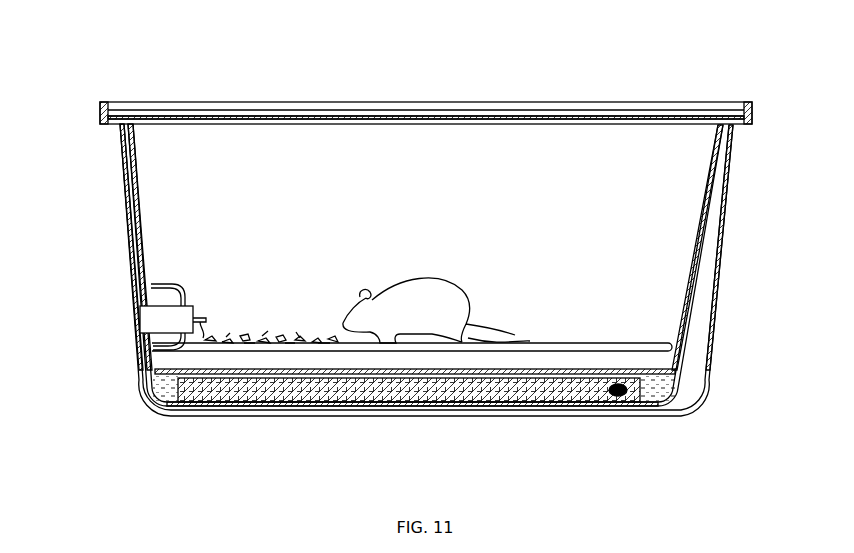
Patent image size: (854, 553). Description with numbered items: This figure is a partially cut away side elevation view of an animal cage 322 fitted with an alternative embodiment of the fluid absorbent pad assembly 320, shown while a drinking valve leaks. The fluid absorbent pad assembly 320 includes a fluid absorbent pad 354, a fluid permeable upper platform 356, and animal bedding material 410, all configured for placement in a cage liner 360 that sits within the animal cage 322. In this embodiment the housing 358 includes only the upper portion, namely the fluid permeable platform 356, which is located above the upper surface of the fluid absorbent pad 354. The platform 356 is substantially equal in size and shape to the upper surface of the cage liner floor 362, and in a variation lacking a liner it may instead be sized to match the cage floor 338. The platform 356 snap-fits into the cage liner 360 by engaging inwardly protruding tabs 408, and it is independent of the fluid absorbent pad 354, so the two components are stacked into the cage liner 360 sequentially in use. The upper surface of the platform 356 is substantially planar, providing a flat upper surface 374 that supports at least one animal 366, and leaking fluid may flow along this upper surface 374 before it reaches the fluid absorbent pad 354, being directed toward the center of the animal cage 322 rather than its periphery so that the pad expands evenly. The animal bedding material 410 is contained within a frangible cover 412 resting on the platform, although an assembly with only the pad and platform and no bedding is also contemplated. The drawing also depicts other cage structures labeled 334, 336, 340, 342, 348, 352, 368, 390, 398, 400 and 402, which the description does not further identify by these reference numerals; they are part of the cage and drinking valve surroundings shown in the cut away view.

The fluid absorbent pad assembly 320 is at (225, 90).
The animal cage 322 is at (725, 205).
The feeder/water bottle 334 is at (196, 307).
The drinking nozzle 336 is at (208, 322).
The cage floor 338 is at (495, 410).
The upper rim of cage body 340 is at (722, 158).
The left side wall 342 is at (125, 198).
The lid 348 is at (540, 150).
The feeder bracket 352 is at (178, 282).
The fluid absorbent pad 354 is at (335, 395).
The fluid permeable upper platform 356 is at (625, 372).
The housing 358 is at (136, 384).
The cage liner 360 is at (690, 252).
The cage liner floor 362 is at (575, 405).
The animal 366 is at (445, 296).
The sensor 368 is at (620, 400).
The upper surface 374 is at (258, 375).
The bottom wall 390 is at (686, 410).
The inner liner 398 is at (705, 192).
The inner wall surface 400 is at (140, 188).
The cage interior 402 is at (410, 188).
The inwardly protruding tabs 408 is at (150, 363).
The animal bedding material 410 is at (290, 338).
The frangible cover 412 is at (585, 343).